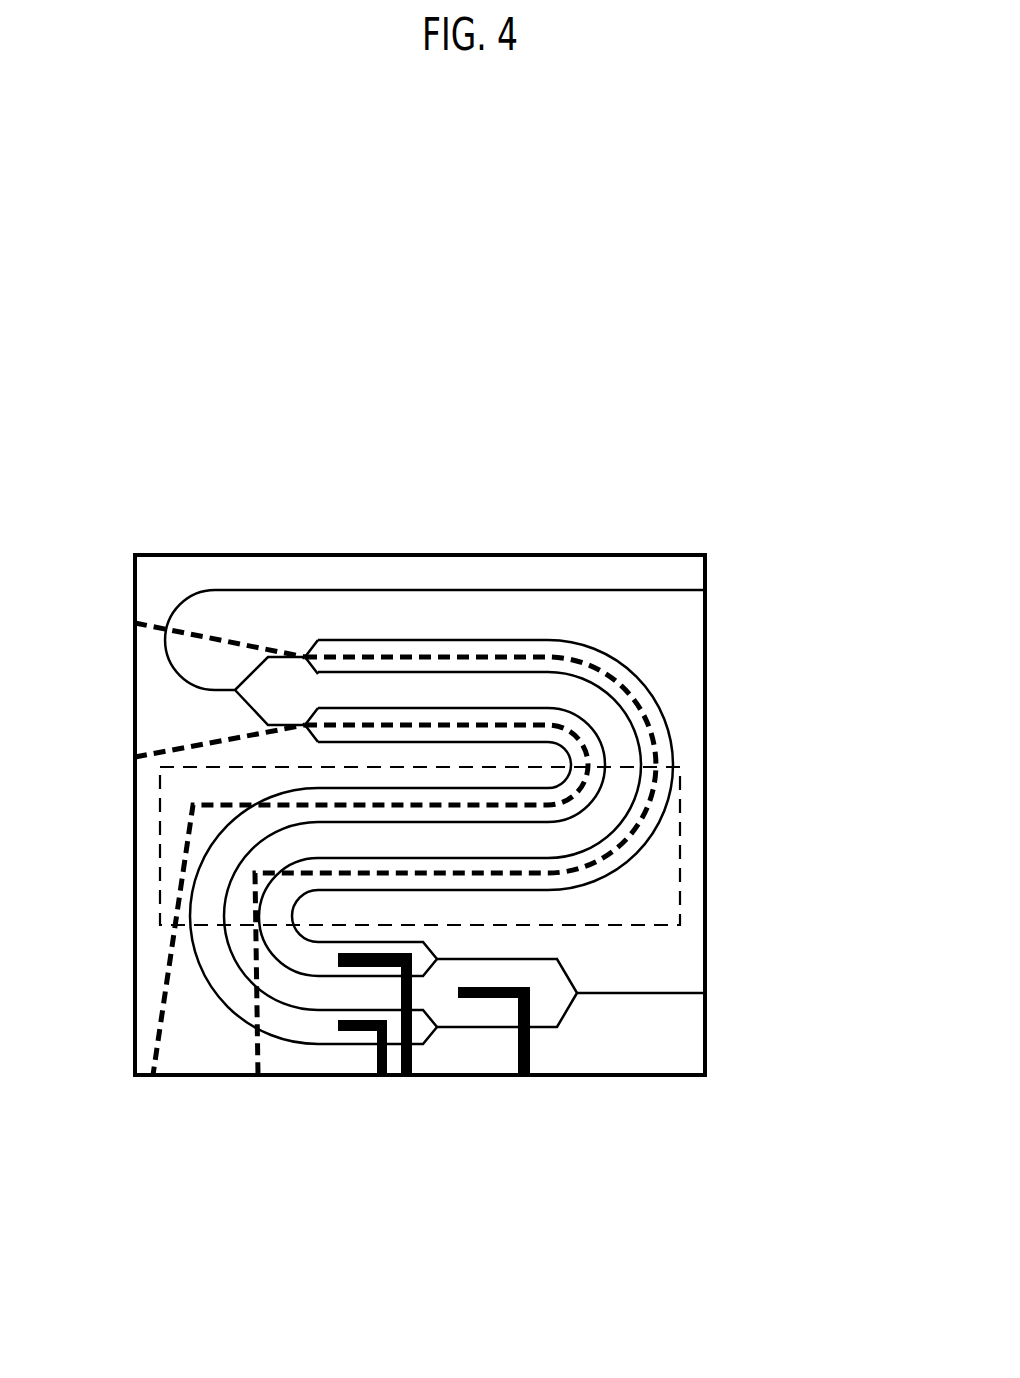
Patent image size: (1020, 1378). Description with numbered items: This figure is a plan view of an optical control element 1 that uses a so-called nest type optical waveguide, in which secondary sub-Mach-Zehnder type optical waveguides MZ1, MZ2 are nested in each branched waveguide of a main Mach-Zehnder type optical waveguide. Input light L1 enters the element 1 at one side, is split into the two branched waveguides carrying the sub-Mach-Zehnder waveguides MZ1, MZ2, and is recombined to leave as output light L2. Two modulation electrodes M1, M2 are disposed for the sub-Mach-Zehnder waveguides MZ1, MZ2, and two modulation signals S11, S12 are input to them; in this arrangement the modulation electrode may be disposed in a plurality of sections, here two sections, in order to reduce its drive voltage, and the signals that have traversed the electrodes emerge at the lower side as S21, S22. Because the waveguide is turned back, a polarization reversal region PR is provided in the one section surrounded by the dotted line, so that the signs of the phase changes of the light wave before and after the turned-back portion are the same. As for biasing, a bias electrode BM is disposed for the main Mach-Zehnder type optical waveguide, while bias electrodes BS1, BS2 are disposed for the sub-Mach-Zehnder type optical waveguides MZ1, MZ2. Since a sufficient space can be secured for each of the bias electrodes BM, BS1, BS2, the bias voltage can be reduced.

The optical modulator chip (substrate) 1 is at (658, 555).
The input light L1 is at (710, 592).
The output light L2 is at (705, 989).
The sub-Mach-Zehnder type optical waveguide MZ1 is at (647, 685).
The sub-Mach-Zehnder type optical waveguide MZ2 is at (600, 739).
The modulation electrode M1 is at (337, 655).
The modulation electrode M2 is at (405, 725).
The modulation signal S11 is at (88, 619).
The modulation signal S12 is at (88, 753).
The first output stray light S21 is at (254, 1075).
The second output stray light S22 is at (149, 1075).
The photoresist / protection region PR is at (680, 845).
The bias electrode BS1 is at (373, 967).
The bias electrode BS2 is at (367, 1030).
The bias electrode BM is at (516, 1040).